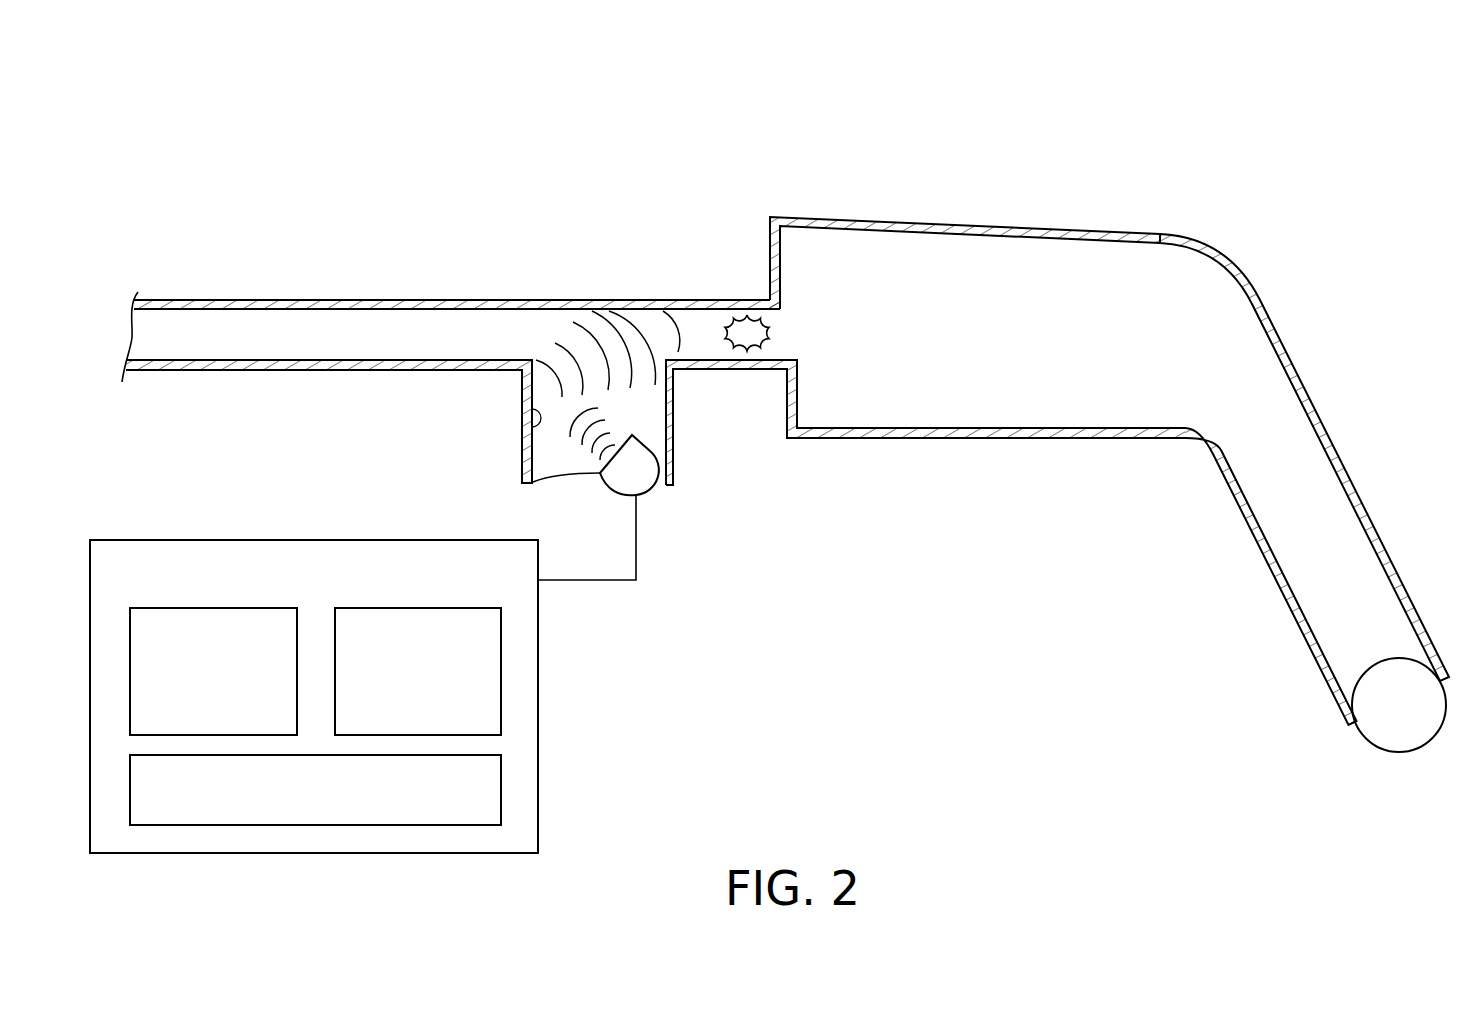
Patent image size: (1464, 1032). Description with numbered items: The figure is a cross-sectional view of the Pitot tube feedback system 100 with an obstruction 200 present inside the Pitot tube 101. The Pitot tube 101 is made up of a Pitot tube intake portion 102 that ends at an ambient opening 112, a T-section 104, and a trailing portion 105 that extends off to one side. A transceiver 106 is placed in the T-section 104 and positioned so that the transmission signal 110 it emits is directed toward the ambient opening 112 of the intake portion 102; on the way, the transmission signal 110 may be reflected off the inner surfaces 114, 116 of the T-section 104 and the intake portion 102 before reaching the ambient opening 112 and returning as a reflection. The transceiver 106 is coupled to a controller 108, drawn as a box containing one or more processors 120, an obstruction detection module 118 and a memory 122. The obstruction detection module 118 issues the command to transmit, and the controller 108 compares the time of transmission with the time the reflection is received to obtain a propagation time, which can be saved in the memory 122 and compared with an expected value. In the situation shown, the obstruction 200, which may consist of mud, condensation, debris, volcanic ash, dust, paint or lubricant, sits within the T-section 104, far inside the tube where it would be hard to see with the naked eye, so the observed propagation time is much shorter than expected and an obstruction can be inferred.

The Pitot tube feedback system 100 is at (297, 160).
The Pitot tube 101 is at (758, 124).
The Pitot tube intake portion 102 is at (885, 225).
The T-section 104 is at (577, 303).
The trailing portion 105 is at (387, 300).
The transceiver 106 is at (638, 460).
The controller 108 is at (385, 588).
The transmission signal 110 is at (627, 307).
The ambient opening 112 is at (1401, 753).
The inner surface of T-section 114 is at (522, 433).
The inner surface of Pitot tube intake portion 116 is at (1343, 449).
The obstruction detection module 118 is at (438, 725).
The processors 120 is at (232, 697).
The memory 122 is at (335, 820).
The obstruction 200 is at (745, 308).